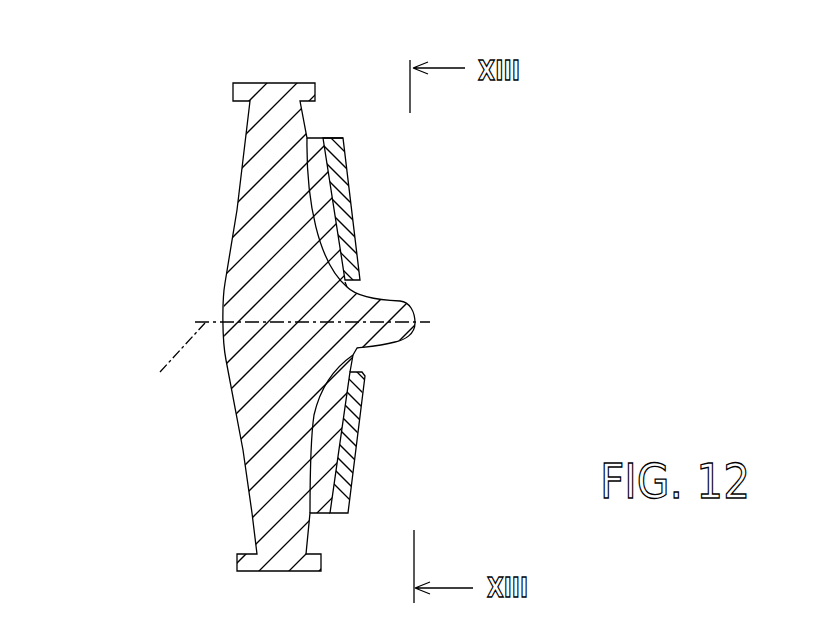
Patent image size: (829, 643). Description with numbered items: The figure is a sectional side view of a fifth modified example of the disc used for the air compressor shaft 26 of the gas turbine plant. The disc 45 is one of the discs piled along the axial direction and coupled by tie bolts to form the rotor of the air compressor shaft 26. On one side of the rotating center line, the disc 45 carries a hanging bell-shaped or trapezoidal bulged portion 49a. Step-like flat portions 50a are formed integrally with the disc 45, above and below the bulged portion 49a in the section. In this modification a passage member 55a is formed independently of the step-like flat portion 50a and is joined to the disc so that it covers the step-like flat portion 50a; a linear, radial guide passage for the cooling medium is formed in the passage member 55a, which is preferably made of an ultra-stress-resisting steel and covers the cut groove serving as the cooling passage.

The air compressor shaft 26 is at (322, 321).
The disc 45 is at (230, 222).
The bulged portion 49a is at (403, 305).
The step-like flat portion 50a is at (313, 148).
The passage member 55a is at (353, 193).